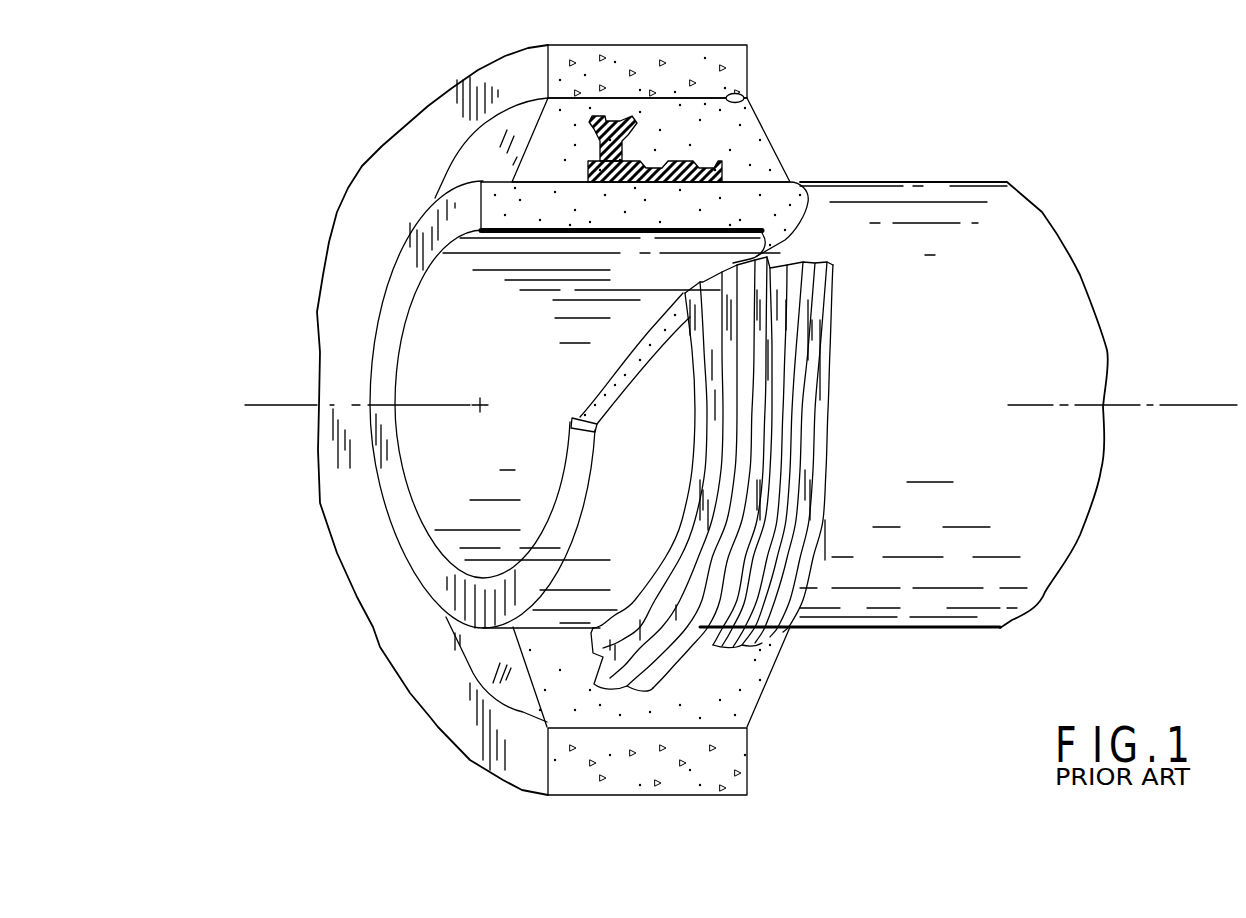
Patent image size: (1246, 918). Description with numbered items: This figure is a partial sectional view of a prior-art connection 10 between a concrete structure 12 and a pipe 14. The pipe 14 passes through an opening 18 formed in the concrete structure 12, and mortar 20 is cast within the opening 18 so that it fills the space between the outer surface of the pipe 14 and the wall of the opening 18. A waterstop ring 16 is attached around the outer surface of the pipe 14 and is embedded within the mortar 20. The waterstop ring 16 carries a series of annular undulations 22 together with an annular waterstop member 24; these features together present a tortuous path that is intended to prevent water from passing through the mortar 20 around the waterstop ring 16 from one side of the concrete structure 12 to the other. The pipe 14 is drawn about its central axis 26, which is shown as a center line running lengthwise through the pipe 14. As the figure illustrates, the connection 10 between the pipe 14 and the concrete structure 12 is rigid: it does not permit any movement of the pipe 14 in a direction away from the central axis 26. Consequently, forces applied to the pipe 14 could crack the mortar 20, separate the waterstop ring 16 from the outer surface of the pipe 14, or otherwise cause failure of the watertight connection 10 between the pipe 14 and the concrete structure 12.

The prior connection 10 is at (266, 106).
The concrete structure 12 is at (737, 56).
The pipe 14 is at (1044, 211).
The waterstop ring 16 is at (597, 150).
The opening 18 is at (745, 99).
The mortar 20 is at (750, 140).
The annular undulations 22 is at (677, 163).
The annular waterstop member 24 is at (598, 112).
The central axis 26 is at (272, 405).